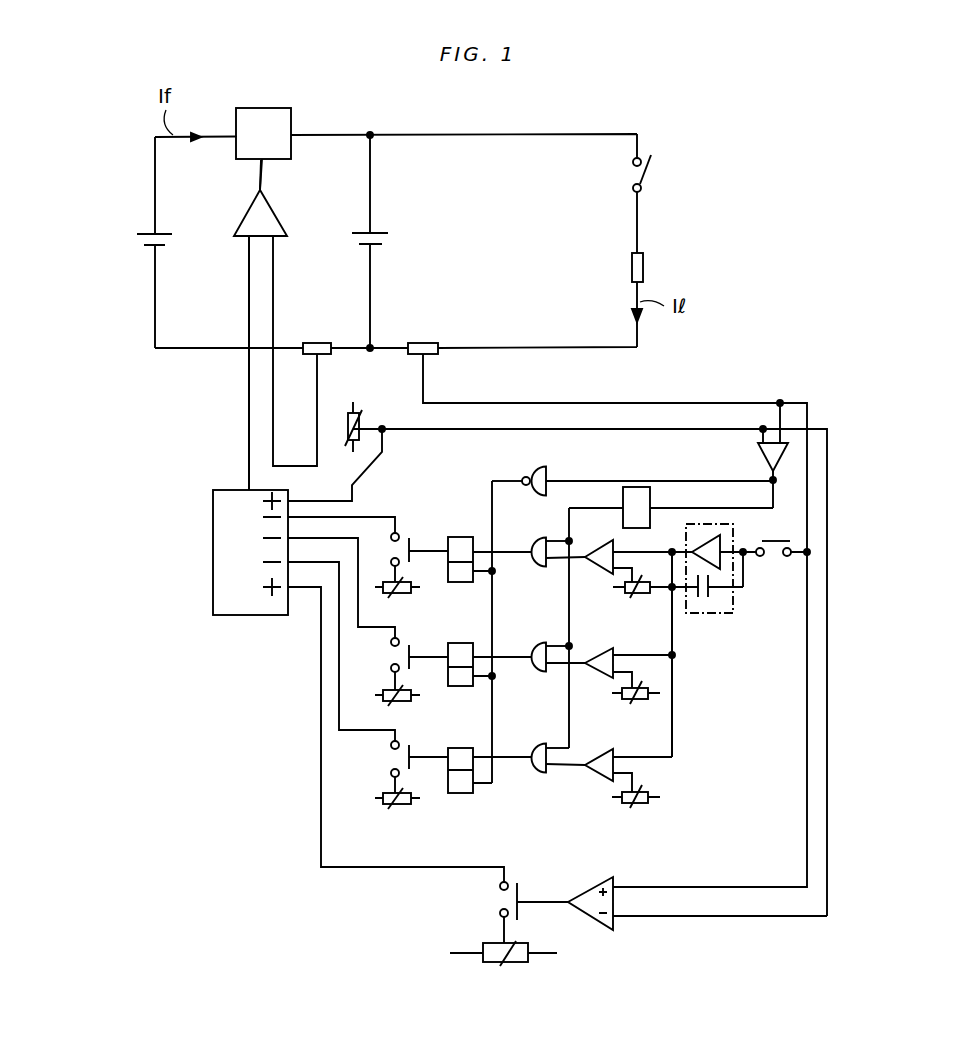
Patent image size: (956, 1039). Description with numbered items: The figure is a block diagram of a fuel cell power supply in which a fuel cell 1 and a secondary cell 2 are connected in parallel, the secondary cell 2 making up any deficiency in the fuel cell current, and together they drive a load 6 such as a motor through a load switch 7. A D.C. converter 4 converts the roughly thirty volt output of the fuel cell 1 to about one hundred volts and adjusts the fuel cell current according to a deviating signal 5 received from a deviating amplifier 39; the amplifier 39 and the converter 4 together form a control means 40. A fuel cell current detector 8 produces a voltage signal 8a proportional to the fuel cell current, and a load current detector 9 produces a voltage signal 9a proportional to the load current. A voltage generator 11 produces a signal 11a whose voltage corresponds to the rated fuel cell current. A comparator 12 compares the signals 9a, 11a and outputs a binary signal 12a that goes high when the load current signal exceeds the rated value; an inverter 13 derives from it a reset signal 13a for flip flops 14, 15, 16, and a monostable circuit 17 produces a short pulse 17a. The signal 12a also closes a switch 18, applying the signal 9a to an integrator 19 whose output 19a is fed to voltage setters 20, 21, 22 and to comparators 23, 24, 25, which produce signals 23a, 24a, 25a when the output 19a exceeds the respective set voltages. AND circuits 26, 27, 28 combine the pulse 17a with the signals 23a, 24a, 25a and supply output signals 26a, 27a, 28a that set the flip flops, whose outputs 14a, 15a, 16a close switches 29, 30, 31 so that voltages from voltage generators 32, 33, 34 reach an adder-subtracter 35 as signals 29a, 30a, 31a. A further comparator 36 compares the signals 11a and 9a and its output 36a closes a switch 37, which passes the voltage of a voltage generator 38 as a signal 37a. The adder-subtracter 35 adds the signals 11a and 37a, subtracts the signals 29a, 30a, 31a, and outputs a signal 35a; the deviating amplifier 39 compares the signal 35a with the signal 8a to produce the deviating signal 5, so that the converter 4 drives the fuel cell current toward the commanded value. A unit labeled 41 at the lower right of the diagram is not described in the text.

The fuel cell 1 is at (134, 238).
The secondary cell 2 is at (392, 238).
The D.C. converter 4 is at (263, 133).
The deviating signal 5 is at (258, 177).
The load 6 is at (646, 270).
The load switch 7 is at (655, 181).
The fuel cell current detector 8 is at (317, 343).
The voltage signal 8a is at (318, 380).
The load current detector 9 is at (423, 343).
The voltage signal 9a is at (503, 403).
The voltage generator 11 is at (348, 434).
The signal 11a is at (384, 427).
The comparator 12 is at (759, 452).
The binary signal 12a is at (765, 473).
The inverter 13 is at (544, 467).
The reset signal 13a is at (519, 478).
The flip flop 14 is at (460, 537).
The output signal 14a is at (431, 551).
The flip flop 15 is at (460, 643).
The output signal 15a is at (431, 657).
The flip flop 16 is at (460, 748).
The output signal 16a is at (431, 757).
The monostable circuit 17 is at (636, 507).
The pulse signal 17a is at (606, 505).
The switch 18 is at (770, 558).
The integrator 19 is at (722, 613).
The output voltage 19a is at (673, 705).
The voltage setter 20 is at (633, 601).
The voltage setter 21 is at (633, 706).
The voltage setter 22 is at (630, 808).
The comparator 23 is at (600, 546).
The signal 23a is at (600, 560).
The comparator 24 is at (598, 652).
The signal 24a is at (566, 675).
The comparator 25 is at (599, 752).
The signal 25a is at (578, 772).
The AND circuit 26 is at (540, 537).
The output signal 26a is at (515, 551).
The AND circuit 27 is at (546, 643).
The output signal 27a is at (520, 656).
The AND circuit 28 is at (536, 745).
The output signal 28a is at (523, 760).
The switch 29 is at (392, 563).
The signal 29a is at (395, 517).
The switch 30 is at (386, 659).
The signal 30a is at (358, 615).
The switch 31 is at (386, 760).
The signal 31a is at (339, 682).
The voltage generator 32 is at (391, 597).
The voltage generator 33 is at (390, 701).
The voltage generator 34 is at (391, 805).
The adder-subtracter 35 is at (250, 552).
The signal 35a is at (249, 421).
The comparator 36 is at (596, 878).
The binary signal 36a is at (550, 902).
The switch 37 is at (499, 902).
The output signal 37a is at (380, 870).
The voltage generator 38 is at (500, 962).
The deviating amplifier 39 is at (260, 214).
The control means 40 is at (283, 212).
The discharge control unit 41 is at (744, 761).